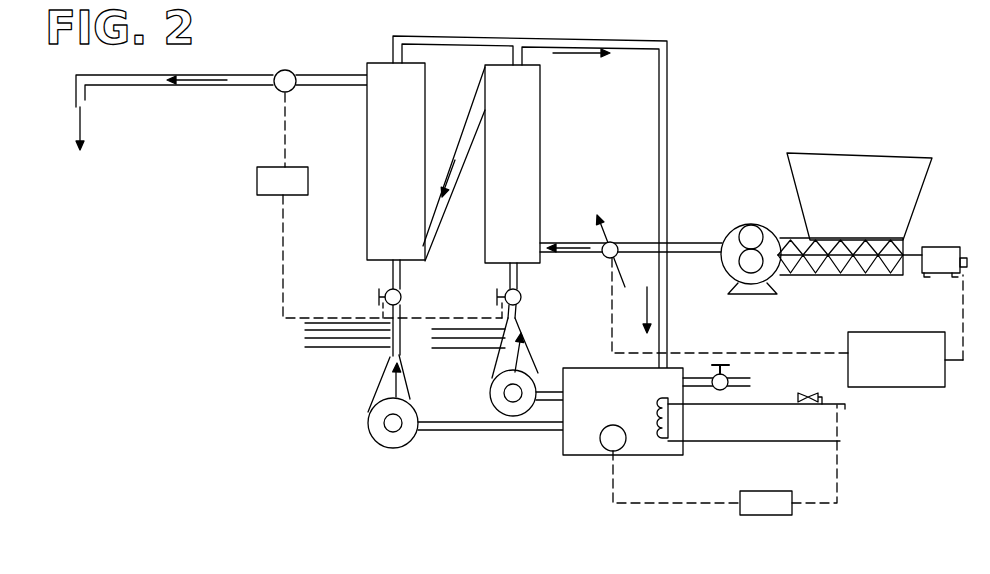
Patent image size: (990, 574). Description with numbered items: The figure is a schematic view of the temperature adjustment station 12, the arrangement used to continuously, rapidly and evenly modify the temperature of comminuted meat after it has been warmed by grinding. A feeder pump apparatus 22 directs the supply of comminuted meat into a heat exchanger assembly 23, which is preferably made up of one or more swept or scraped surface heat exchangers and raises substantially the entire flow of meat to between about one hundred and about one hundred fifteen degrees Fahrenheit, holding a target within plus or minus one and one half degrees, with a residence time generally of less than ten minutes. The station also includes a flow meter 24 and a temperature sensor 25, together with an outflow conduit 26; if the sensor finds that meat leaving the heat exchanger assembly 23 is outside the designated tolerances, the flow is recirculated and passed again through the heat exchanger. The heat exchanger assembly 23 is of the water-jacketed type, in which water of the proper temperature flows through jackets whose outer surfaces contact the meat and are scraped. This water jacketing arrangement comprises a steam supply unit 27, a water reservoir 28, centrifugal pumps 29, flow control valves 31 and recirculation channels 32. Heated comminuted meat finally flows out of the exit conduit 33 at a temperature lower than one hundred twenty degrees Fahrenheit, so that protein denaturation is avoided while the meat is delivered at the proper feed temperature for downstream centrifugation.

The temperature adjustment station 12 is at (745, 98).
The feeder pump apparatus 22 is at (904, 246).
The heat exchanger assembly 23 is at (543, 152).
The flow meter 24 is at (620, 233).
The temperature sensor 25 is at (285, 70).
The outflow conduit 26 is at (360, 85).
The steam supply unit 27 is at (848, 472).
The water reservoir 28 is at (580, 411).
The centrifugal pumps 29 is at (487, 402).
The flow control valves 31 is at (497, 297).
The recirculation channels 32 is at (642, 40).
The exit conduit 33 is at (88, 93).